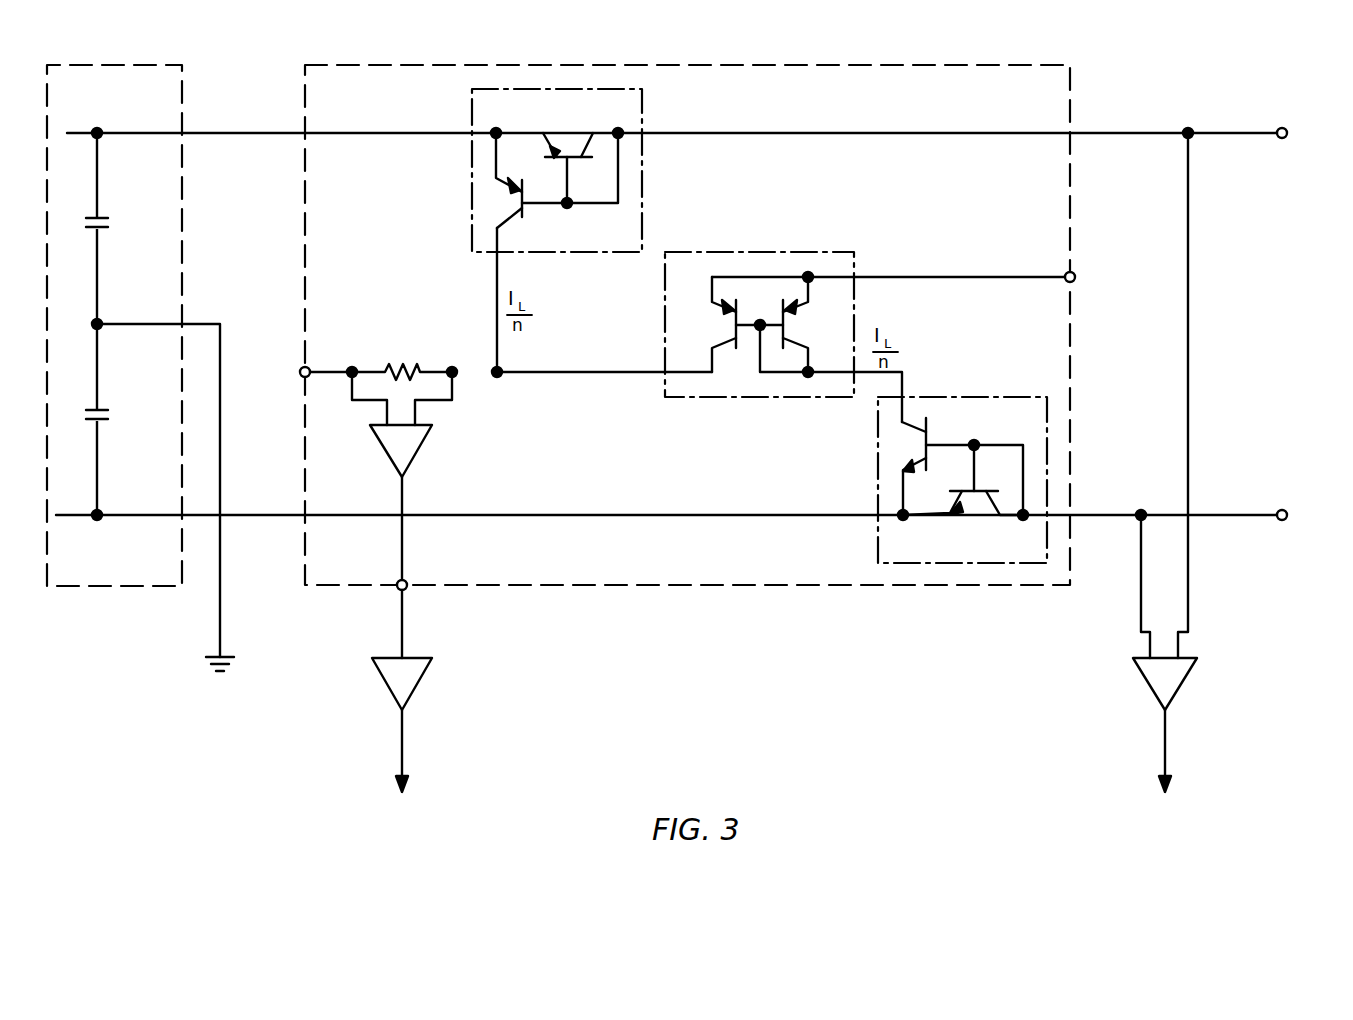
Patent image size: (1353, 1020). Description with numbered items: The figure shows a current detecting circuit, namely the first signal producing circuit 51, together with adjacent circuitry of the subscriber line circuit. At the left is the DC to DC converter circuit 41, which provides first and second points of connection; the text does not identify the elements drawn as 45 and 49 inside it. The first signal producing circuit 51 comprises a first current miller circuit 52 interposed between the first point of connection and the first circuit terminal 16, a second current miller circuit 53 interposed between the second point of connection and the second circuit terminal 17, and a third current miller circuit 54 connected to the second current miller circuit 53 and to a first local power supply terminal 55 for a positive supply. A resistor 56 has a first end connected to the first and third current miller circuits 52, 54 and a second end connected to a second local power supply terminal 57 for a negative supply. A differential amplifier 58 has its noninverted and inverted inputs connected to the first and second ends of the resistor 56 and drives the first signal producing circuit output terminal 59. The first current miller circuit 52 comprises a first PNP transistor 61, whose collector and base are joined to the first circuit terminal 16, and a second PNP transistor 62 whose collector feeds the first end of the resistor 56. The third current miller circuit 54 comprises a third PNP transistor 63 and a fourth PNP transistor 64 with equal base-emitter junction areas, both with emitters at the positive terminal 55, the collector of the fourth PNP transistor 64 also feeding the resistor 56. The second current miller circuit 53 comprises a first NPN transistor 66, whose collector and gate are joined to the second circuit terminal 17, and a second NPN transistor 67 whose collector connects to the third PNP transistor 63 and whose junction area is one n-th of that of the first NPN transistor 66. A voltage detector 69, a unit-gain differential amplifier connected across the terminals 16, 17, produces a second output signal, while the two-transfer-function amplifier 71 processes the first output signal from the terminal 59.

The first circuit terminal 16 is at (1288, 128).
The second circuit terminal 17 is at (1288, 510).
The DC to DC converter circuit 41 is at (128, 585).
The first cell 45 is at (86, 220).
The second cell 49 is at (88, 419).
The first signal producing circuit 51 is at (608, 585).
The first current miller circuit 52 is at (643, 118).
The second current miller circuit 53 is at (872, 486).
The third current miller circuit 54 is at (755, 250).
The first local power supply terminal 55 is at (1075, 272).
The resistor 56 is at (405, 360).
The second local power supply terminal 57 is at (300, 368).
The differential amplifier 58 is at (418, 455).
The first signal producing circuit output terminal 59 is at (408, 588).
The first PNP transistor 61 is at (574, 130).
The second PNP transistor 62 is at (524, 218).
The third PNP transistor 63 is at (800, 305).
The fourth PNP transistor 64 is at (724, 338).
The first NPN transistor 66 is at (994, 508).
The second NPN transistor 67 is at (930, 430).
The second signal producing circuit 69 is at (1183, 690).
The two-transfer-function amplifier 71 is at (420, 690).